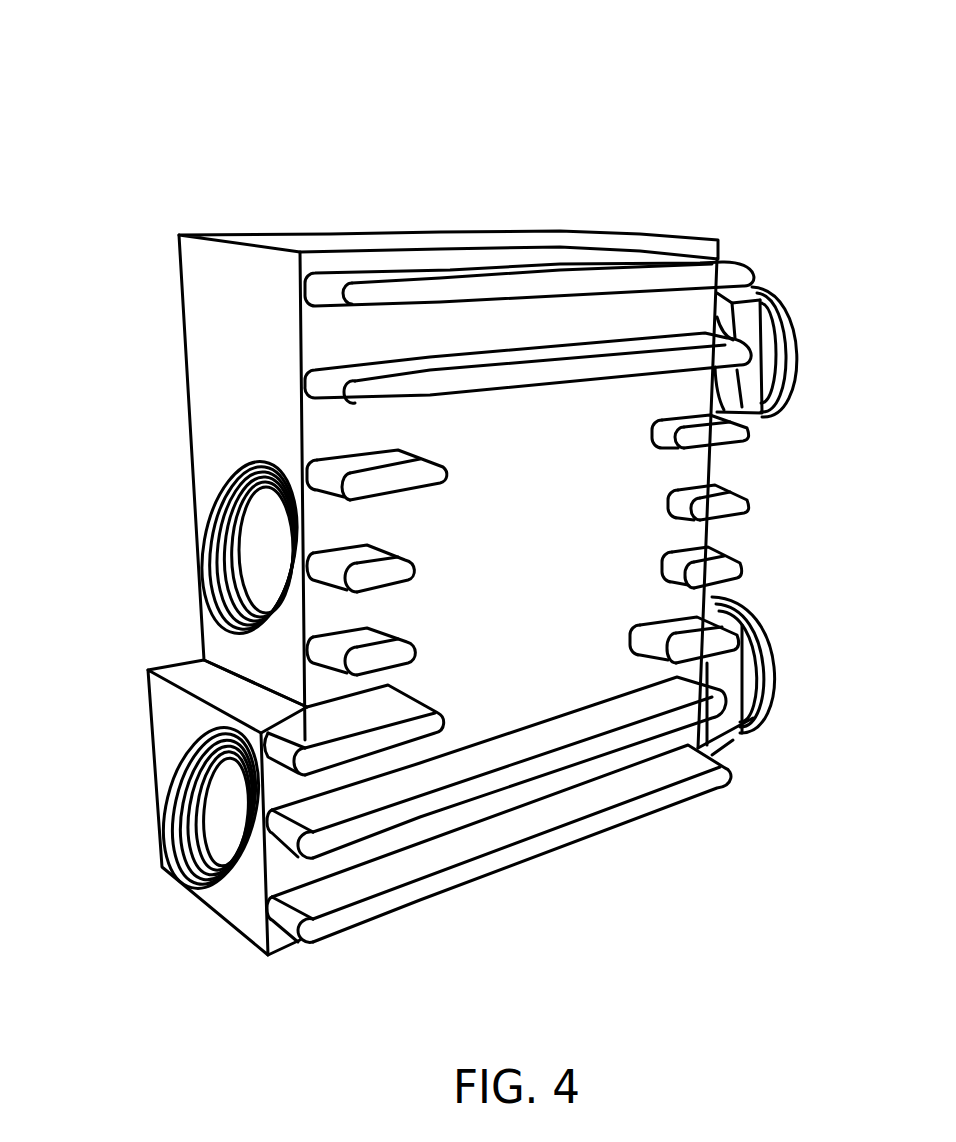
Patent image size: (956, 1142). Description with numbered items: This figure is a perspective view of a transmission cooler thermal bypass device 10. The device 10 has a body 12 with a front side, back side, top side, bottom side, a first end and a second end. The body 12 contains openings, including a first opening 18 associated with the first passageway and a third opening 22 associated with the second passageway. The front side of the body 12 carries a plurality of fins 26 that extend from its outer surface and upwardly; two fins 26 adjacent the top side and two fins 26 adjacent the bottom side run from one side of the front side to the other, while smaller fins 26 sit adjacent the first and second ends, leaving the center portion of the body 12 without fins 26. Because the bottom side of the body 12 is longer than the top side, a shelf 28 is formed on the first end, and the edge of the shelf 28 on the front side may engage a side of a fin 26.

The transmission cooler thermal bypass device 10 is at (519, 107).
The body 12 is at (282, 248).
The first opening 18 is at (207, 813).
The third opening 22 is at (217, 523).
The fins 26 is at (698, 278).
The shelf 28 is at (198, 678).